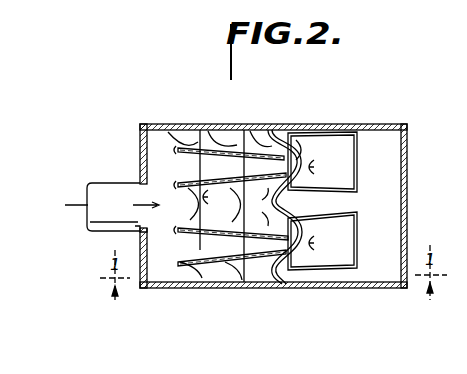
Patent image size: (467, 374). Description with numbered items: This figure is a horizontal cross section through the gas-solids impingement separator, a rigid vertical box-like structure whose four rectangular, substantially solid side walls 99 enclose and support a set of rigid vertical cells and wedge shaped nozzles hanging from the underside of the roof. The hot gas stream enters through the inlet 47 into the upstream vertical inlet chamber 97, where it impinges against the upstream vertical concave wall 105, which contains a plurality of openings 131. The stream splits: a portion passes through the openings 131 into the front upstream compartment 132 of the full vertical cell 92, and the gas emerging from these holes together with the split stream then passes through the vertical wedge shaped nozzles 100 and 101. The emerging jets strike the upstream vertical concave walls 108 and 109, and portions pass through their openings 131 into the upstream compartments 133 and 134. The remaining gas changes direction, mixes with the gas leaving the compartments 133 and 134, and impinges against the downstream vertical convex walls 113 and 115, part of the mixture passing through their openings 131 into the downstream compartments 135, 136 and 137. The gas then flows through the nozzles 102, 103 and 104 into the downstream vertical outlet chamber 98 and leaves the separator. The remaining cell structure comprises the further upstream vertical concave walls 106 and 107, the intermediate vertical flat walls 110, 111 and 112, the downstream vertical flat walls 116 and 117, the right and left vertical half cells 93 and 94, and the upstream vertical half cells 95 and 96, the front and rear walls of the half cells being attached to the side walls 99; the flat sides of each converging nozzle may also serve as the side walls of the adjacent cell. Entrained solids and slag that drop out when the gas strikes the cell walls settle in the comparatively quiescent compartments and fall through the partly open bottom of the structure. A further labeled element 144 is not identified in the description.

The inlet 47 is at (88, 190).
The full vertical cell 92 is at (206, 140).
The right vertical half cell 93 is at (209, 138).
The left vertical half cell 94 is at (183, 283).
The upstream vertical half cell 95 is at (302, 145).
The upstream vertical half cell 96 is at (348, 262).
The upstream vertical inlet chamber 97 is at (140, 233).
The downstream vertical outlet chamber 98 is at (384, 155).
The side walls 99 is at (394, 132).
The vertical wedge shaped nozzle 100 is at (194, 243).
The vertical wedge shaped nozzle 101 is at (193, 166).
The vertical wedge shaped nozzle 102 is at (296, 130).
The vertical wedge shaped nozzle 103 is at (326, 211).
The vertical wedge shaped nozzle 104 is at (298, 294).
The upstream vertical concave wall 105 is at (192, 193).
The upstream vertical concave wall 106 is at (172, 140).
The upstream vertical concave wall 107 is at (167, 283).
The upstream vertical concave wall 108 is at (270, 140).
The upstream vertical concave wall 109 is at (291, 279).
The intermediate vertical flat wall 110 is at (233, 238).
The intermediate vertical flat wall 111 is at (216, 140).
The intermediate vertical flat wall 112 is at (250, 283).
The downstream vertical convex wall 113 is at (282, 207).
The downstream vertical convex wall 115 is at (244, 283).
The downstream vertical flat wall 116 is at (362, 135).
The downstream vertical flat wall 117 is at (362, 248).
The openings 131 is at (274, 206).
The front upstream compartment 132 is at (192, 218).
The upstream compartment 133 is at (398, 131).
The upstream compartment 134 is at (380, 224).
The downstream compartment 135 is at (252, 134).
The downstream compartment 136 is at (258, 237).
The downstream compartment 137 is at (247, 283).
The upper deflector 144 is at (278, 132).